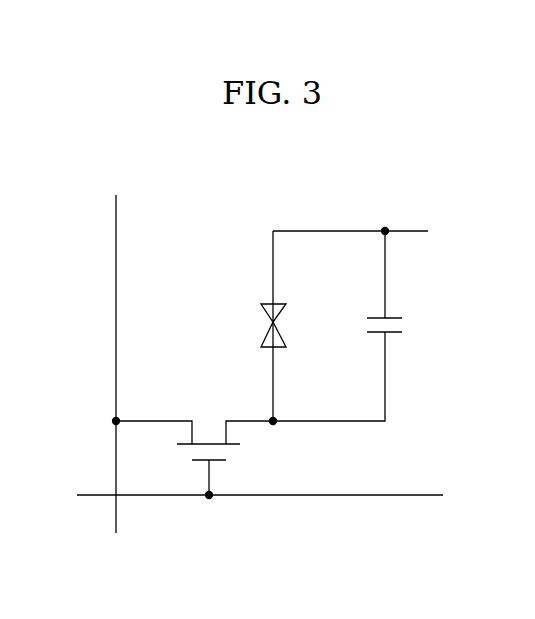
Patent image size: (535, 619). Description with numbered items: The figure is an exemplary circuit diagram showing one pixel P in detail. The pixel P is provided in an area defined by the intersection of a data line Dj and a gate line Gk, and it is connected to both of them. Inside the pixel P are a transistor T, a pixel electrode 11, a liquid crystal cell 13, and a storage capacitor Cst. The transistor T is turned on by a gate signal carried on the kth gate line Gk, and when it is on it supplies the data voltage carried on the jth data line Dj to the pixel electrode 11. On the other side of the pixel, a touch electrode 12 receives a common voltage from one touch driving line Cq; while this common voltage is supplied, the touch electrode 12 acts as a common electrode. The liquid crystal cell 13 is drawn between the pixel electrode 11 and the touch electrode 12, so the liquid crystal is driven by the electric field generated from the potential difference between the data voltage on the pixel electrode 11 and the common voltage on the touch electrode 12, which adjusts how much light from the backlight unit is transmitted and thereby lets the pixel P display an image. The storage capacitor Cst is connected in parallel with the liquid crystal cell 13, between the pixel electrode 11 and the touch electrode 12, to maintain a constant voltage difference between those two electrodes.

The pixel electrode 11 is at (262, 347).
The touch electrode 12 is at (262, 304).
The liquid crystal cell 13 is at (271, 328).
The transistor T is at (193, 458).
The storage capacitor Cst is at (355, 326).
The data line Dj is at (114, 233).
The gate line Gk is at (328, 496).
The pixel P is at (393, 214).
The touch driving line Cq is at (421, 232).